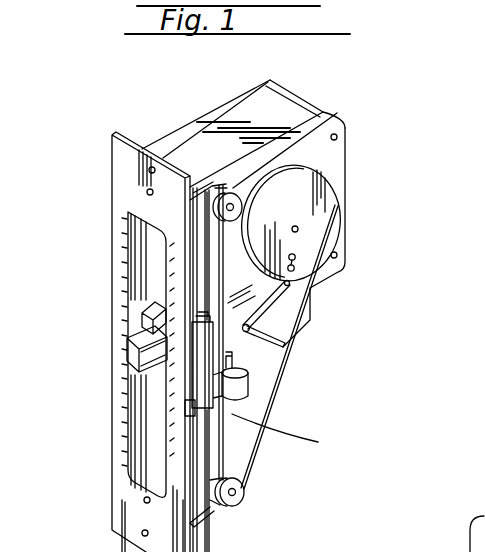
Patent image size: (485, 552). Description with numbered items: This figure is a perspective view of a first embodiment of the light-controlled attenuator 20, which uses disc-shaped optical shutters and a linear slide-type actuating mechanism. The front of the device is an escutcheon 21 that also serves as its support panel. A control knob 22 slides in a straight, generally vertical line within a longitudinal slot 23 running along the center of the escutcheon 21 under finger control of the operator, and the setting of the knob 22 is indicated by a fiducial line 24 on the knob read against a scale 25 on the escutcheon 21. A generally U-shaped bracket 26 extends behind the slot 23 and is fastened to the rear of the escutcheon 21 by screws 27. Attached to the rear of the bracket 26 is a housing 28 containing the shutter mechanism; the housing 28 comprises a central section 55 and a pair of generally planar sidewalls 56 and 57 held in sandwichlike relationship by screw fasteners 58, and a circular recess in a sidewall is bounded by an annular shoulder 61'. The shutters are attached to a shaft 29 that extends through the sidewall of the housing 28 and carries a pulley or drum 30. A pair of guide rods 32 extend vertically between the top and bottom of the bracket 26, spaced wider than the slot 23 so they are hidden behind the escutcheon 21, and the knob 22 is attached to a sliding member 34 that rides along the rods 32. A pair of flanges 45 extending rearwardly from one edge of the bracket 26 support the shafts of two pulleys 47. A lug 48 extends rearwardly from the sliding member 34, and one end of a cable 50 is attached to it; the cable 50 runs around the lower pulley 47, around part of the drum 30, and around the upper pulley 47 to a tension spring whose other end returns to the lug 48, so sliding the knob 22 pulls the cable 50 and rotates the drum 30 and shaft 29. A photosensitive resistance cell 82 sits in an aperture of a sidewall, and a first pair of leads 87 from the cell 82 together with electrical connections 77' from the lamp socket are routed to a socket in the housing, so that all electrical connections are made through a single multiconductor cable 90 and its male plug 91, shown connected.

The light-controlled attenuator 20 is at (106, 131).
The escutcheon 21 is at (113, 512).
The control knob 22 is at (142, 356).
The longitudinal slot 23 is at (150, 288).
The fiducial line 24 is at (150, 360).
The scale 25 is at (117, 238).
The U-shaped bracket 26 is at (200, 518).
The screws 27 is at (146, 192).
The housing 28 is at (321, 112).
The shaft 29 is at (299, 229).
The pulley or drum 30 is at (325, 208).
The guide rods 32 is at (145, 422).
The sliding member 34 is at (240, 418).
The flanges 45 is at (212, 510).
The pulleys 47 is at (230, 192).
The lug 48 is at (248, 375).
The cable 50 is at (273, 402).
The central section 55 is at (288, 98).
The sidewall 56 is at (336, 168).
The sidewall 57 is at (225, 115).
The screw fasteners 58 is at (340, 137).
The annular shoulder 61' is at (455, 534).
The electrical connections 77' is at (303, 343).
The photosensitive resistance cell 82 is at (296, 282).
The first pair of leads 87 is at (272, 300).
The multiconductor cable 90 is at (289, 432).
The male plug 91 is at (240, 391).